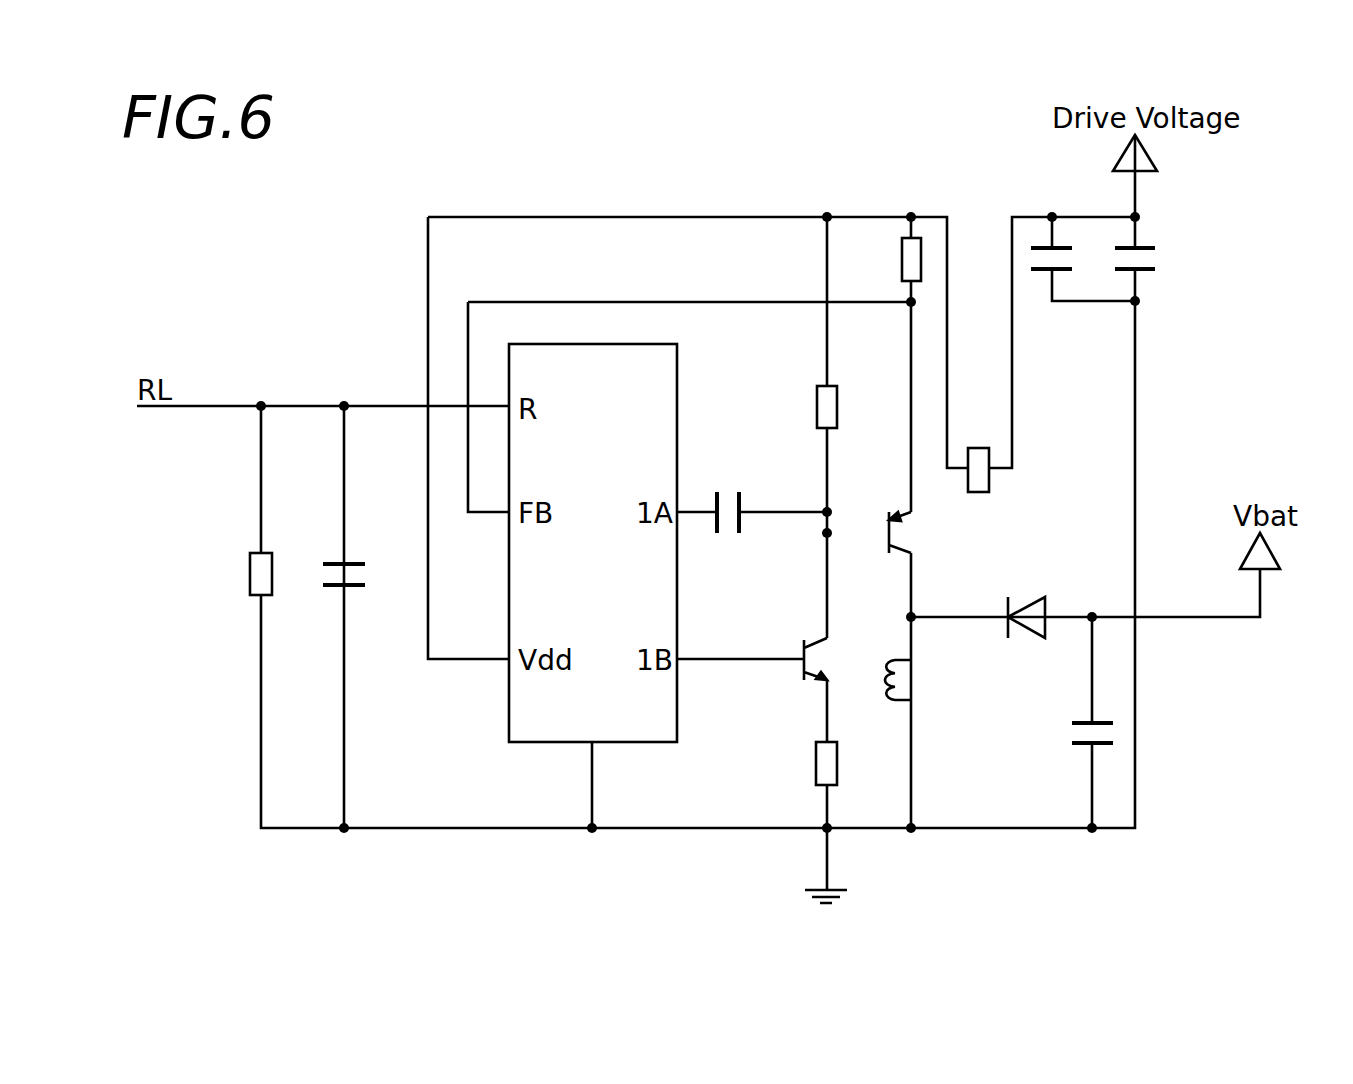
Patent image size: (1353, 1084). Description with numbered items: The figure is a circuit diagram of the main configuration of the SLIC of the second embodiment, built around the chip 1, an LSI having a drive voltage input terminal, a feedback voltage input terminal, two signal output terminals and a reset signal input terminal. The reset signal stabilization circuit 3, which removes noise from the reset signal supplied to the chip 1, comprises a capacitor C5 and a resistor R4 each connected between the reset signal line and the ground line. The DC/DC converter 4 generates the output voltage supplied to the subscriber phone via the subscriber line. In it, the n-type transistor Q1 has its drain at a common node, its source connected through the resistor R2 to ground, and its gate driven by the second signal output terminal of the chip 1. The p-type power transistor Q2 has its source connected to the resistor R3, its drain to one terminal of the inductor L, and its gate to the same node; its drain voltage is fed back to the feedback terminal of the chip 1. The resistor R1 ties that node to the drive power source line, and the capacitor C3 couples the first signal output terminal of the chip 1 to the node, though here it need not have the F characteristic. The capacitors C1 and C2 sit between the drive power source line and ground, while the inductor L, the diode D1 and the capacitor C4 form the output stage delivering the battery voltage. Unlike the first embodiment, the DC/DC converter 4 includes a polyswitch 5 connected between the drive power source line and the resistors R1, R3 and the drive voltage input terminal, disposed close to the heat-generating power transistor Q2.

The chip 1 is at (509, 575).
The reset signal stabilization circuit 3 is at (302, 296).
The DC/DC converter 4 is at (900, 876).
The polyswitch 5 is at (977, 494).
The resistor R1 is at (817, 408).
The resistor R2 is at (816, 766).
The resistor R3 is at (902, 262).
The resistor R4 is at (250, 574).
The capacitor C1 is at (1148, 247).
The capacitor C2 is at (1048, 272).
The capacitor C3 is at (740, 494).
The capacitor C4 is at (1090, 722).
The capacitor C5 is at (344, 563).
The n-type transistor Q1 is at (822, 640).
The p-type power transistor Q2 is at (897, 516).
The diode D1 is at (1040, 598).
The inductor L is at (893, 679).